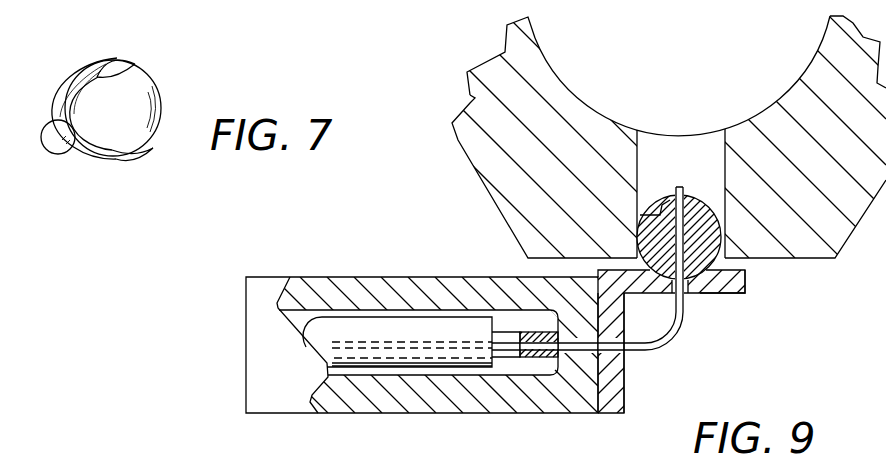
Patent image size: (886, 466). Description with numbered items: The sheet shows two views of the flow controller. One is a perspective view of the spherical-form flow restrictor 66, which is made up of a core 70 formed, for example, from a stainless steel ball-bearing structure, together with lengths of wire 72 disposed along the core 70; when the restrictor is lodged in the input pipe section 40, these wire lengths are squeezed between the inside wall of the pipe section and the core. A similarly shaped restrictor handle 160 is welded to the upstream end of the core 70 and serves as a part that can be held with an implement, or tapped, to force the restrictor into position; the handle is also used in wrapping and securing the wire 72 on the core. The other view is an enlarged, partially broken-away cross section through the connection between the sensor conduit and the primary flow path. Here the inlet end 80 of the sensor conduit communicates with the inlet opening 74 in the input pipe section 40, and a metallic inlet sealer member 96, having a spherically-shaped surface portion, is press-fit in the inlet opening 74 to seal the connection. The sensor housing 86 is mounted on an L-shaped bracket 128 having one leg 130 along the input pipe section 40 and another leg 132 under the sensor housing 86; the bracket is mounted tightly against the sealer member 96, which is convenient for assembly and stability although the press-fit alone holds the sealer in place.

In FIG. 9, the input pipe section 40 is at (470, 95).
In FIG. 7, the flow restrictor 66 is at (159, 115).
In FIG. 7, the core 70 is at (62, 84).
In FIG. 7, the lengths of wire 72 is at (127, 72).
In FIG. 9, the inlet opening 74 is at (650, 148).
In FIG. 9, the inlet end 80 is at (681, 186).
In FIG. 9, the sensor housing 86 is at (367, 277).
In FIG. 9, the inlet sealer member 96 is at (727, 241).
In FIG. 9, the L-shaped bracket 128 is at (590, 270).
In FIG. 9, the leg 130 is at (740, 295).
In FIG. 9, the leg 132 is at (623, 387).
In FIG. 7, the restrictor handle 160 is at (55, 140).